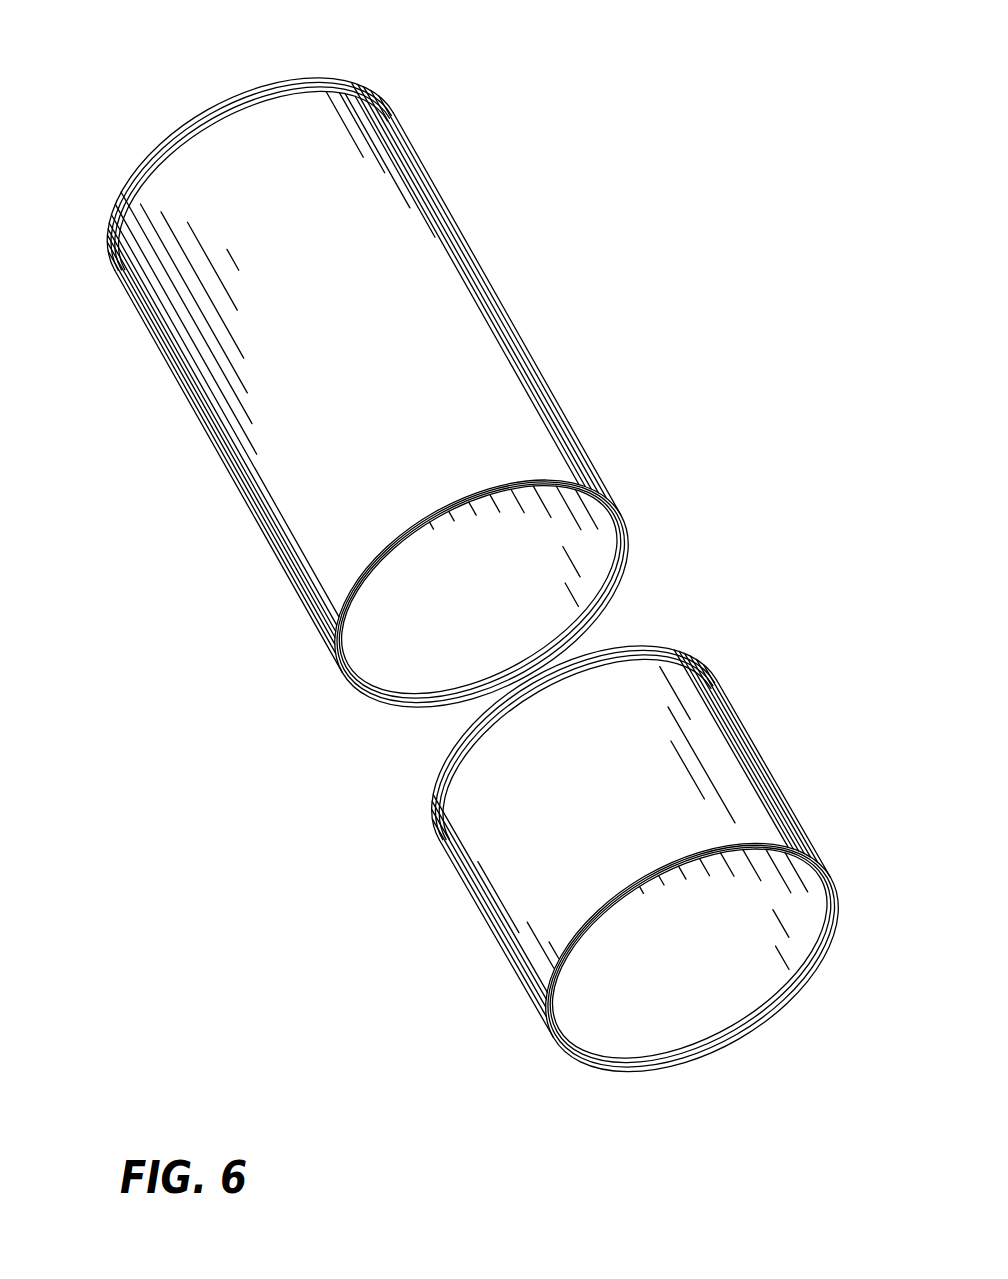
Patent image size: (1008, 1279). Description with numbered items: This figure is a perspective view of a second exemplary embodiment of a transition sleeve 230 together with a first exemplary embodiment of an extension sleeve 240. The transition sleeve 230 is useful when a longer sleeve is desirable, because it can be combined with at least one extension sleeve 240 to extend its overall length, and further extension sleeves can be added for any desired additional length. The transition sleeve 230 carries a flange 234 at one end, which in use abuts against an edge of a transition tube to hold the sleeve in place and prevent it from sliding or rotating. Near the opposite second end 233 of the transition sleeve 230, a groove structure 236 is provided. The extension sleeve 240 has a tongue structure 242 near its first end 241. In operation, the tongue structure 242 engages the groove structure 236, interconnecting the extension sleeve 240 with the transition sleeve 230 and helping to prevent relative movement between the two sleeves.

The transition sleeve 230 is at (172, 107).
The flange 234 is at (358, 85).
The second end 233 is at (620, 580).
The groove structure 236 is at (413, 697).
The extension sleeve 240 is at (746, 645).
The first end 241 is at (680, 648).
The tongue structure 242 is at (435, 812).